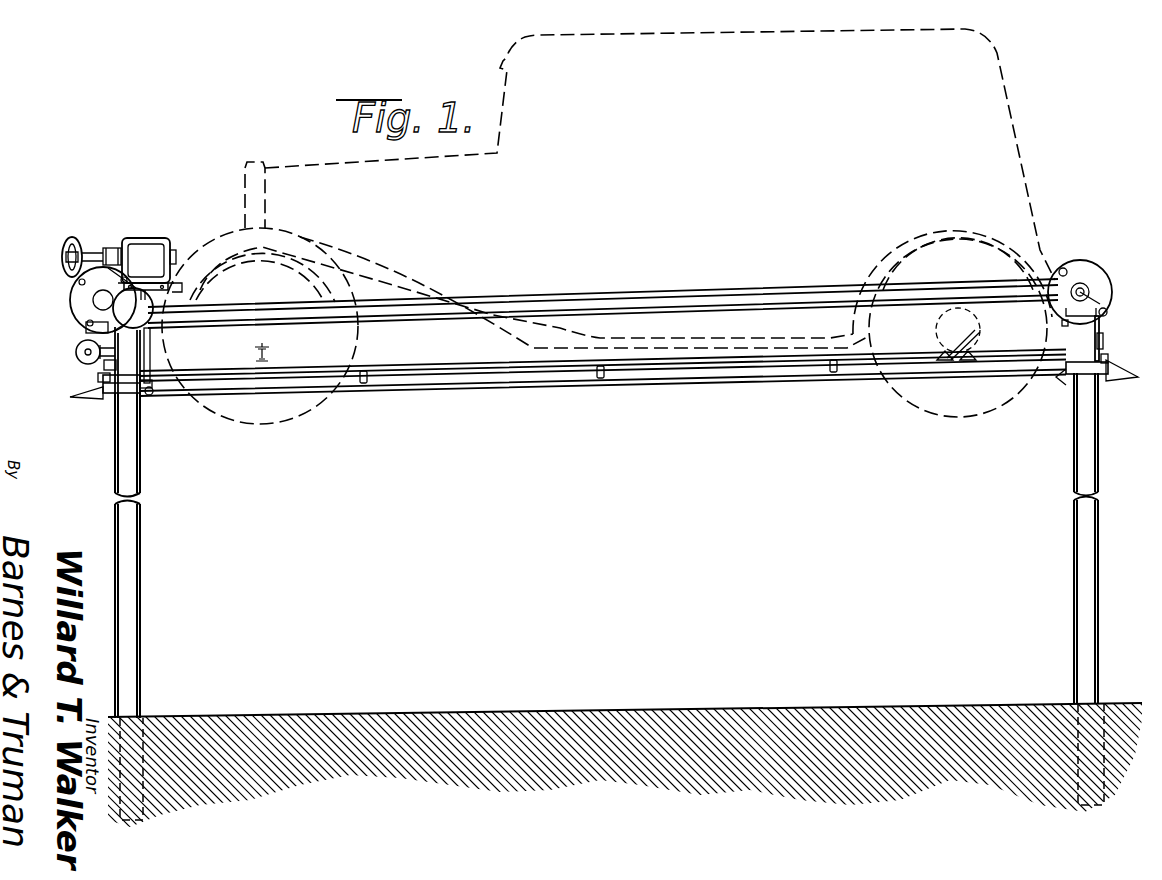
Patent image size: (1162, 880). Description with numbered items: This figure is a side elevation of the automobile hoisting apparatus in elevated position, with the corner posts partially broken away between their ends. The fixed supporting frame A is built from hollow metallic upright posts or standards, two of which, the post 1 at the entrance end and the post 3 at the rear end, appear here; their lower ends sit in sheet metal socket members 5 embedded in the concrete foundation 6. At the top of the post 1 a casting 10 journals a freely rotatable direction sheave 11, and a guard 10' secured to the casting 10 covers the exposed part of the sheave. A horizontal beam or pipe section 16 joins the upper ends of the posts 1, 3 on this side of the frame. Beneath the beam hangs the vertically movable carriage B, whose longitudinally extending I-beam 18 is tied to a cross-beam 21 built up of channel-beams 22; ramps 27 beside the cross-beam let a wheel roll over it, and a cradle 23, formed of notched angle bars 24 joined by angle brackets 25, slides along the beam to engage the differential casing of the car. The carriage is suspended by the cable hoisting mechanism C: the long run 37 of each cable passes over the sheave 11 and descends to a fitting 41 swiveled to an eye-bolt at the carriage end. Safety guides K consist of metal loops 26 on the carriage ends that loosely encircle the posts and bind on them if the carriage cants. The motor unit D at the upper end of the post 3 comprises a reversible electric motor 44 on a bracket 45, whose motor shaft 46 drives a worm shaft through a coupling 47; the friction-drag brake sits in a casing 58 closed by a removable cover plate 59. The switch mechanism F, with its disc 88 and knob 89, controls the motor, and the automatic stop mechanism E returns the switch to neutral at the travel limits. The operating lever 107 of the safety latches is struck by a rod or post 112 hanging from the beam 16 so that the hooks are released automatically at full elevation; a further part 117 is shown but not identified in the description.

The upright post 1 is at (1100, 515).
The upright post 3 is at (140, 577).
The sheet metal socket member 5 is at (146, 718).
The concrete foundation 6 is at (525, 718).
The casting 10 is at (1104, 294).
The guard 10' is at (1091, 290).
The direction sheave 11 is at (1067, 272).
The horizontal beam 16 is at (657, 313).
The longitudinal I-beam 18 is at (513, 388).
The cross-beam 21 is at (1100, 374).
The channel-beam 22 is at (108, 376).
The cradle 23 is at (955, 353).
The angle bar 24 is at (943, 355).
The angle bracket 25 is at (967, 357).
The metal loop 26 is at (135, 413).
The ramp 27 is at (100, 380).
The long run 37 is at (782, 291).
The fitting 41 is at (1103, 336).
The reversible electric motor 44 is at (171, 243).
The bracket 45 is at (182, 284).
The motor shaft 46 is at (135, 240).
The coupling 47 is at (122, 234).
The casing 58 is at (82, 250).
The removable cover plate 59 is at (63, 253).
The disc 88 is at (76, 360).
The handle or knob 89 is at (78, 349).
The operating lever 107 is at (153, 392).
The rod or post 112 is at (150, 353).
The link 117 is at (147, 382).
The fixed supporting frame A is at (147, 526).
The vertically movable carriage B is at (652, 386).
The cable hoisting mechanism C is at (68, 303).
The motor unit D is at (168, 236).
The automatic stop mechanism E is at (78, 330).
The switch mechanism F is at (76, 371).
The safety guides K is at (120, 390).